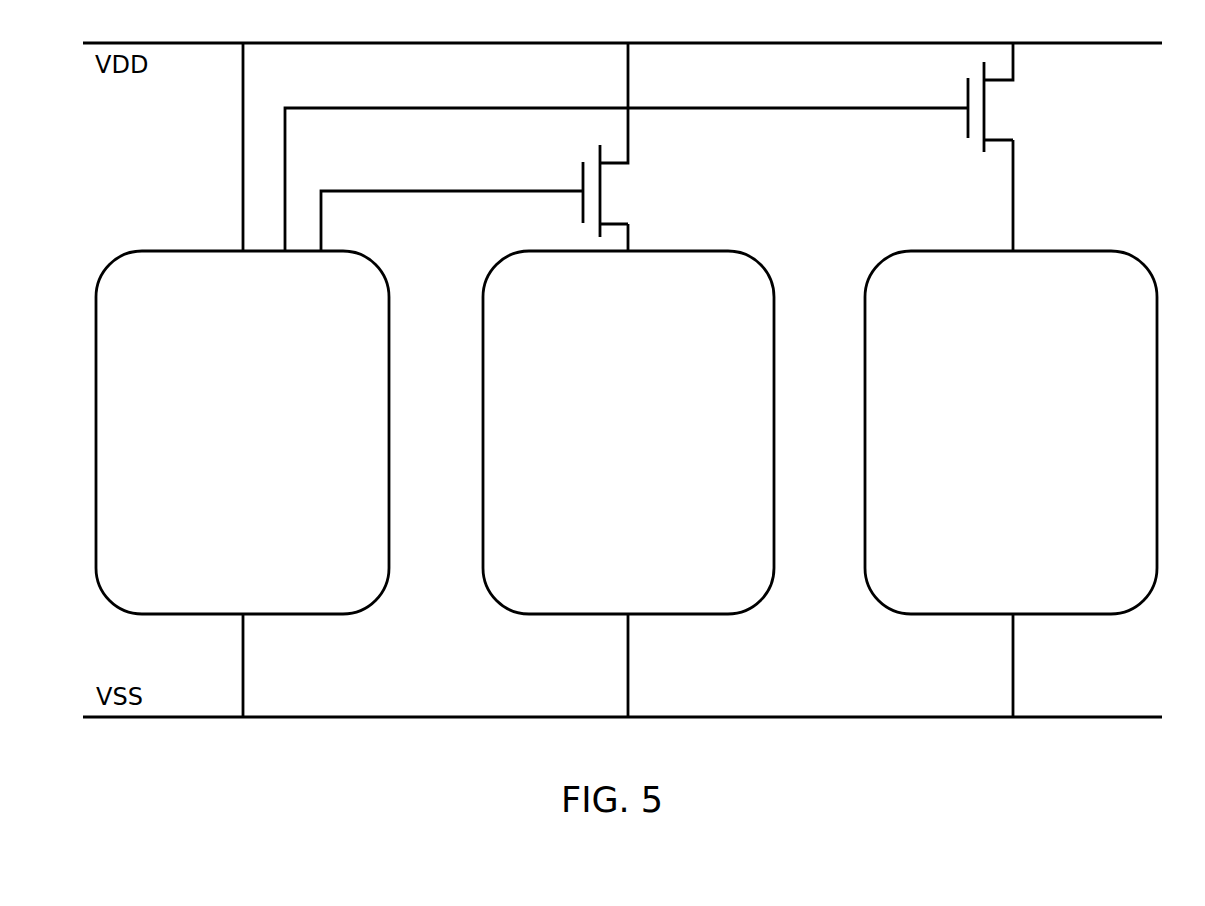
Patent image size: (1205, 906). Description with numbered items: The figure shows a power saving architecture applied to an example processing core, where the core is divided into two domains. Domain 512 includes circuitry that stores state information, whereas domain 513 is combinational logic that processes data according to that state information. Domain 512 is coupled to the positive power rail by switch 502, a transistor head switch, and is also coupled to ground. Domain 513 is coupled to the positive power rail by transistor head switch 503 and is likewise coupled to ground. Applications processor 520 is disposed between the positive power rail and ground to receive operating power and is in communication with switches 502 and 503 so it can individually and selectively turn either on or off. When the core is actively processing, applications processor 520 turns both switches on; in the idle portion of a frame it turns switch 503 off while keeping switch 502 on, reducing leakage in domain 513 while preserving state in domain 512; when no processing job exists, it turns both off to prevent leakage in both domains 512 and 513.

The applications processor 520 is at (218, 445).
The domain 512 is at (603, 445).
The domain 513 is at (986, 445).
The switch 502 is at (621, 197).
The transistor head switch 503 is at (1009, 113).